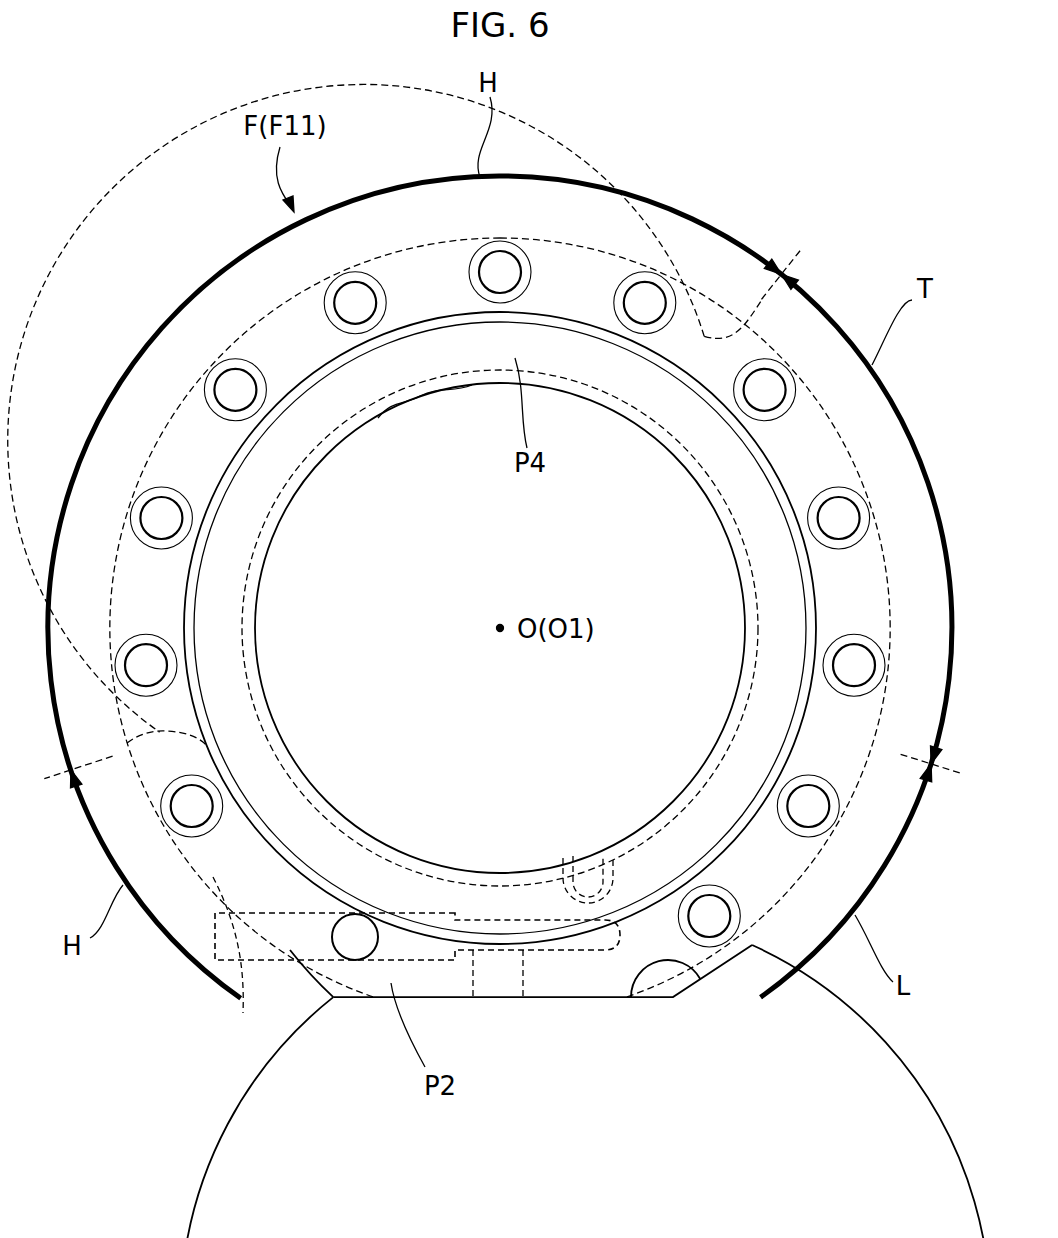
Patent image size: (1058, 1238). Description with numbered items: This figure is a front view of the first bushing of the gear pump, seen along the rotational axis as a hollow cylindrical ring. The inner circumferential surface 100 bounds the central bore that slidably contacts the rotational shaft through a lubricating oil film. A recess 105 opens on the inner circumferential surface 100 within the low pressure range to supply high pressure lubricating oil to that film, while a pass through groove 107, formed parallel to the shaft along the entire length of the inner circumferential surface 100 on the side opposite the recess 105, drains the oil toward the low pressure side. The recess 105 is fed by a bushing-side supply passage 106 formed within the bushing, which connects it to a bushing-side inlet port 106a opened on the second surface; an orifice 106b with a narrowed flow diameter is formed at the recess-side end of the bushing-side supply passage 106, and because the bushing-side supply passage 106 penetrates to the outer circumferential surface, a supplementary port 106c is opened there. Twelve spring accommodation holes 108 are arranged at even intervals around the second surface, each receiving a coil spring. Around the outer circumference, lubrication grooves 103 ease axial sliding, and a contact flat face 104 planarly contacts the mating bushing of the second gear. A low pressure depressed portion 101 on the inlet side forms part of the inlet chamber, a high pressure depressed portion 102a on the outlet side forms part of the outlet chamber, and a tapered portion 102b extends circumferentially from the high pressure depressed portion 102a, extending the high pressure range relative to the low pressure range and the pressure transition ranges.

The inner circumferential surface 100 is at (268, 690).
The low pressure depressed portion 101 is at (762, 893).
The high pressure depressed portion 102a is at (216, 878).
The tapered portion 102b is at (582, 272).
The lubrication groove 103 is at (857, 453).
The contact flat face 104 is at (565, 1000).
The recess 105 is at (583, 860).
The bushing-side supply passage 106 is at (418, 935).
The bushing-side inlet port 106a is at (324, 998).
The orifice 106b is at (540, 870).
The supplementary port 106c is at (243, 1000).
The pass through groove 107 is at (398, 395).
The spring accommodation hole 108 is at (240, 352).